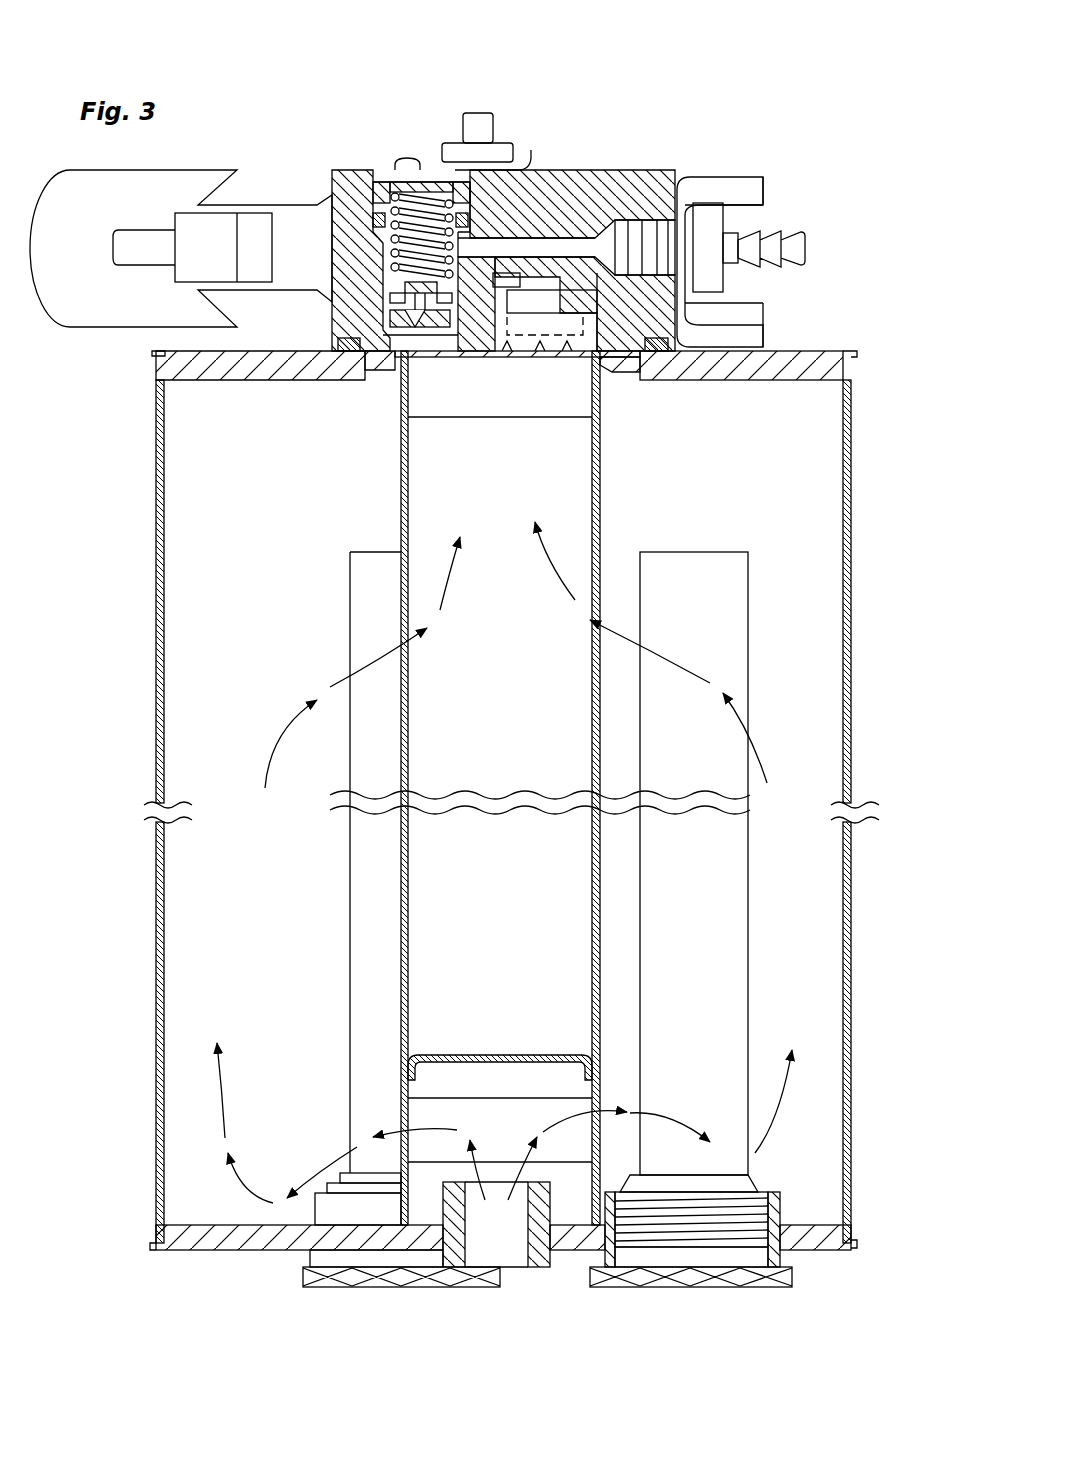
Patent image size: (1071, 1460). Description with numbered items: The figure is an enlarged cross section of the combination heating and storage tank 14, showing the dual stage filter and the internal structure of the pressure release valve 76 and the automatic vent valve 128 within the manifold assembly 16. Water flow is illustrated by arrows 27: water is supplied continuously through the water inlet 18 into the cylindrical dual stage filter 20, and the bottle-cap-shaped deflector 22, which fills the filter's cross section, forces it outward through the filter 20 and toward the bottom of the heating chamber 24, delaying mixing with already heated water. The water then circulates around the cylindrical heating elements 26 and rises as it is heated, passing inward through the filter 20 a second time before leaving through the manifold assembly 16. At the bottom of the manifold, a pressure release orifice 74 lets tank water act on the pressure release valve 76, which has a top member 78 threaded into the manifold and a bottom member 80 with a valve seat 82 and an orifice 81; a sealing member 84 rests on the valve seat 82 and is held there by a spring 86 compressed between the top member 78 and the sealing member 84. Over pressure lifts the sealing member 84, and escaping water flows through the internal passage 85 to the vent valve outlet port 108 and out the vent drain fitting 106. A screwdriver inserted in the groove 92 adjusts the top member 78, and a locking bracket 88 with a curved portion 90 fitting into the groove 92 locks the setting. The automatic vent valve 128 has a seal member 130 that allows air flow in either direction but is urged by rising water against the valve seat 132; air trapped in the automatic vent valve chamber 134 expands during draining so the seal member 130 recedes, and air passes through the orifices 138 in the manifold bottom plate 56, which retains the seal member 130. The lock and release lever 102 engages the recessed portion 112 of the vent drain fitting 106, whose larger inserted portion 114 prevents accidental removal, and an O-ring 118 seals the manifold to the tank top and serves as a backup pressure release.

The combination heating and storage tank 14 is at (852, 430).
The manifold assembly 16 is at (601, 262).
The water inlet 18 is at (510, 1257).
The dual stage filter 20 is at (398, 1117).
The deflector 22 is at (483, 1053).
The heating chamber 24 is at (798, 570).
The heating elements 26 is at (375, 905).
The arrows 27 is at (383, 658).
The manifold bottom plate 56 is at (472, 352).
The pressure release orifice 74 is at (406, 400).
The pressure release valve 76 is at (382, 140).
The top member 78 is at (350, 185).
The bottom member 80 is at (455, 320).
The orifice 81 is at (412, 333).
The valve seat 82 is at (410, 327).
The sealing member 84 is at (380, 332).
The internal passage 85 is at (567, 247).
The spring 86 is at (420, 207).
The locking bracket 88 is at (530, 157).
The curved portion 90 is at (408, 167).
The groove 92 is at (380, 175).
The lock and release lever 102 is at (734, 242).
The vent drain fitting 106 is at (773, 245).
The vent valve outlet port 108 is at (605, 238).
The recessed portion 112 is at (682, 248).
The inserted portion 114 is at (655, 235).
The O-ring 118 is at (655, 352).
The automatic vent valve 128 is at (512, 363).
The seal member 130 is at (595, 355).
The valve seat 132 is at (587, 293).
The automatic vent valve chamber 134 is at (517, 277).
The orifices 138 is at (583, 357).